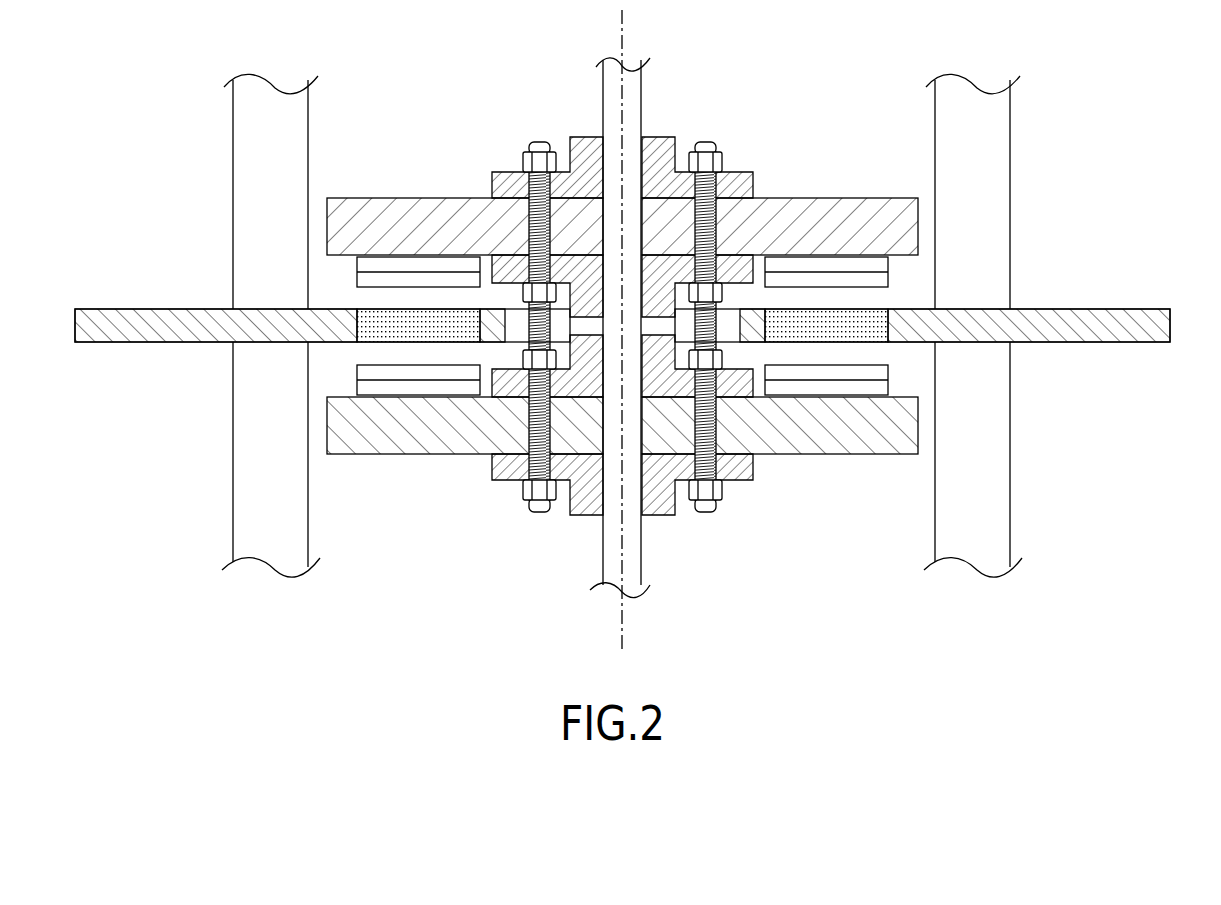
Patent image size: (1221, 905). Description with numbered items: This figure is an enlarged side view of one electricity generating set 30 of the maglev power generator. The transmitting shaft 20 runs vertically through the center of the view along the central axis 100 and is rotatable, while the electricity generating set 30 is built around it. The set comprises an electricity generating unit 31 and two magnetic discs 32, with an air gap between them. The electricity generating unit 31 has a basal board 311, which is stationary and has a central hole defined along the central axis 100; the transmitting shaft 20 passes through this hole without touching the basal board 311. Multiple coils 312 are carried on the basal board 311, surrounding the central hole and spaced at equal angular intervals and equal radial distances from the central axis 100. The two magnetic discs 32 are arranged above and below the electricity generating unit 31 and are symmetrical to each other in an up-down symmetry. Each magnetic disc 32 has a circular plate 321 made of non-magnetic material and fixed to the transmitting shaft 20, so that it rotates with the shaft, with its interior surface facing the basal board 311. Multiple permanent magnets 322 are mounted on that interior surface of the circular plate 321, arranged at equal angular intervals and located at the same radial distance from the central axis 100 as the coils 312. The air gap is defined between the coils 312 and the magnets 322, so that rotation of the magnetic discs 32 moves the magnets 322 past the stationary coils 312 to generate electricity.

The central axis 100 is at (622, 30).
The transmitting shaft 20 is at (642, 555).
The electricity generating set 30 is at (135, 210).
The electricity generating unit 31 is at (619, 314).
The basal board 311 is at (105, 317).
The coils 312 is at (355, 330).
The magnetic disc 32 is at (632, 292).
The circular plate 321 is at (430, 442).
The magnets 322 is at (353, 270).